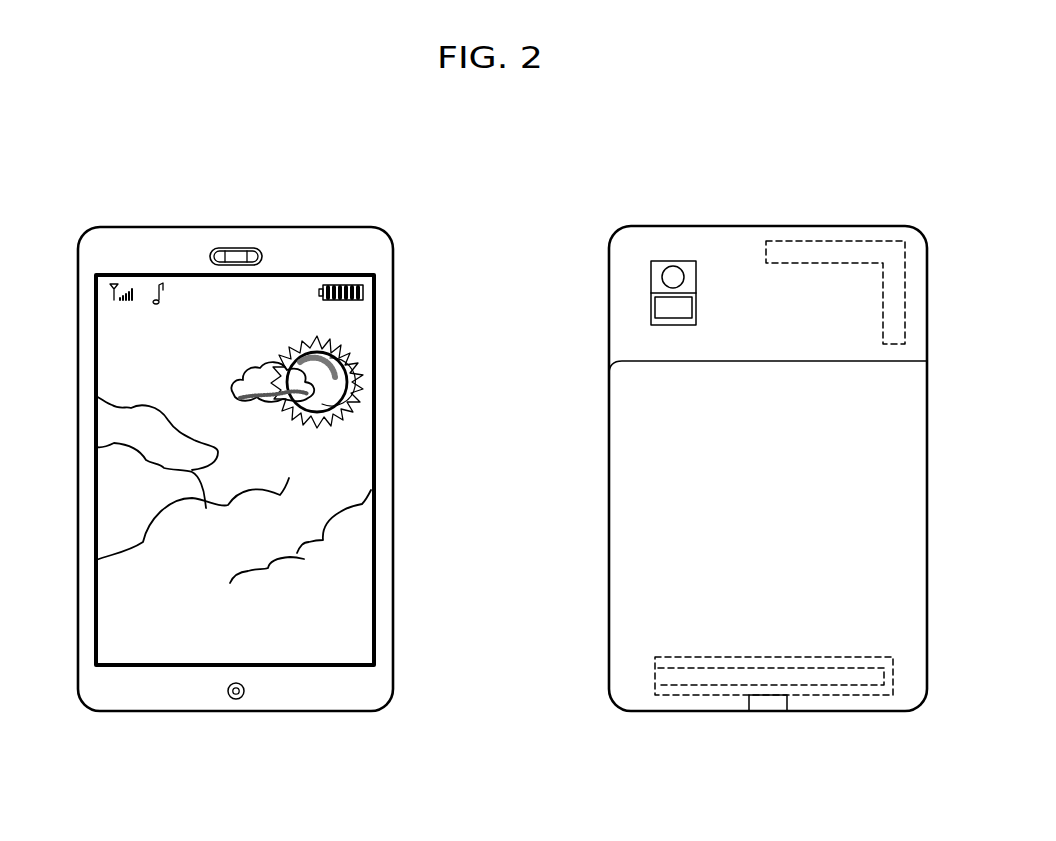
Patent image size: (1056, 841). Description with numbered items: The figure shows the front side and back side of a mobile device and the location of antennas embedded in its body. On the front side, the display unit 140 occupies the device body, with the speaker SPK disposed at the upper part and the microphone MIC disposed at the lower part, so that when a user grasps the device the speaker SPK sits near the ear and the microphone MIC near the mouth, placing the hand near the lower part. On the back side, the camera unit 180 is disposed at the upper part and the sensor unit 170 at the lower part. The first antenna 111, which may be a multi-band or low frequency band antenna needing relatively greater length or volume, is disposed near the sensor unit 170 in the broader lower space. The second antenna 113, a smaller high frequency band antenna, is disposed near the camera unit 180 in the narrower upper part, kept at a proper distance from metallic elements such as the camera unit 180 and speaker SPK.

The display unit 140 is at (363, 331).
The camera unit 180 is at (688, 268).
The second antenna 113 is at (845, 241).
The first antenna 111 is at (893, 674).
The sensor unit 170 is at (768, 704).
The speaker SPK is at (236, 248).
The microphone MIC is at (236, 700).